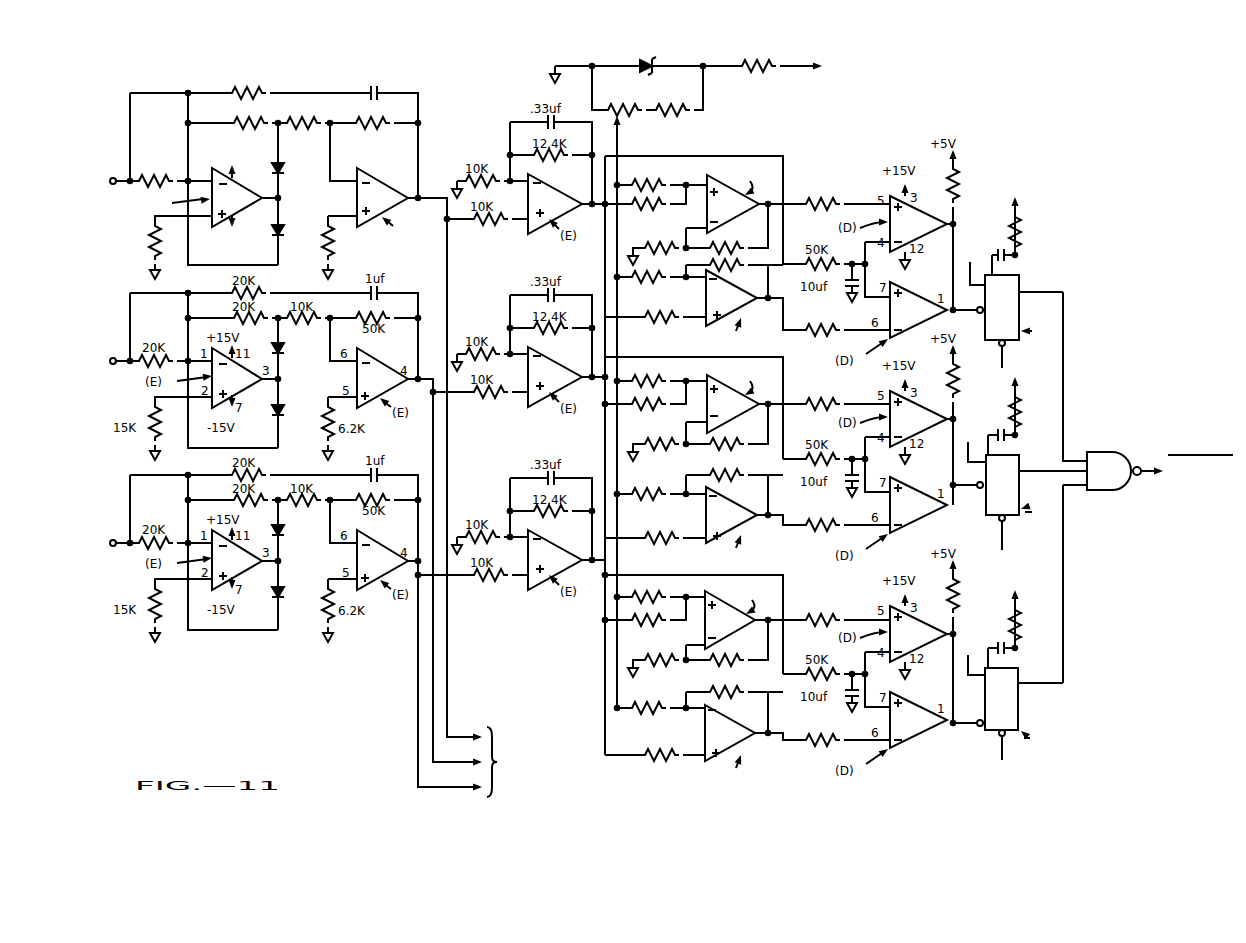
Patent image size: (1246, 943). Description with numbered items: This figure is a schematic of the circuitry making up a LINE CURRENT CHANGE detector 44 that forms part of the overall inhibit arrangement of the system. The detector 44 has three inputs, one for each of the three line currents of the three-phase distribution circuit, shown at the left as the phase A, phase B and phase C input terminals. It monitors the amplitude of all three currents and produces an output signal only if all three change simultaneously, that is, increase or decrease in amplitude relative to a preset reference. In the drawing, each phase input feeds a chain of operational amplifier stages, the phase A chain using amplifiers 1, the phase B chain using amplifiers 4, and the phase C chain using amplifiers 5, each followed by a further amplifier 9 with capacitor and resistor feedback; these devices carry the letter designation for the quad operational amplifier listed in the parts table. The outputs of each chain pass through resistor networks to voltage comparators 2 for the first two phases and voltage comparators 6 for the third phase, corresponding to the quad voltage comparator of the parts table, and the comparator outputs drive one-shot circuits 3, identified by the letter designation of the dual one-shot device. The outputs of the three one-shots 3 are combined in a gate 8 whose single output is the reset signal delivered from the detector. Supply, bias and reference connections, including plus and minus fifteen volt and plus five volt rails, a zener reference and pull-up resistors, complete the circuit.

The first LINE CURRENT CHANGE detector 44 is at (252, 684).
The operational amplifier 1 is at (480, 406).
The operational amplifier 4 is at (480, 519).
The operational amplifier 5 is at (480, 625).
The operational amplifier 9 is at (530, 350).
The comparator 2 is at (871, 350).
The comparator 6 is at (871, 662).
The flip-flop 3 is at (1020, 478).
The NAND gate 8 is at (1148, 487).